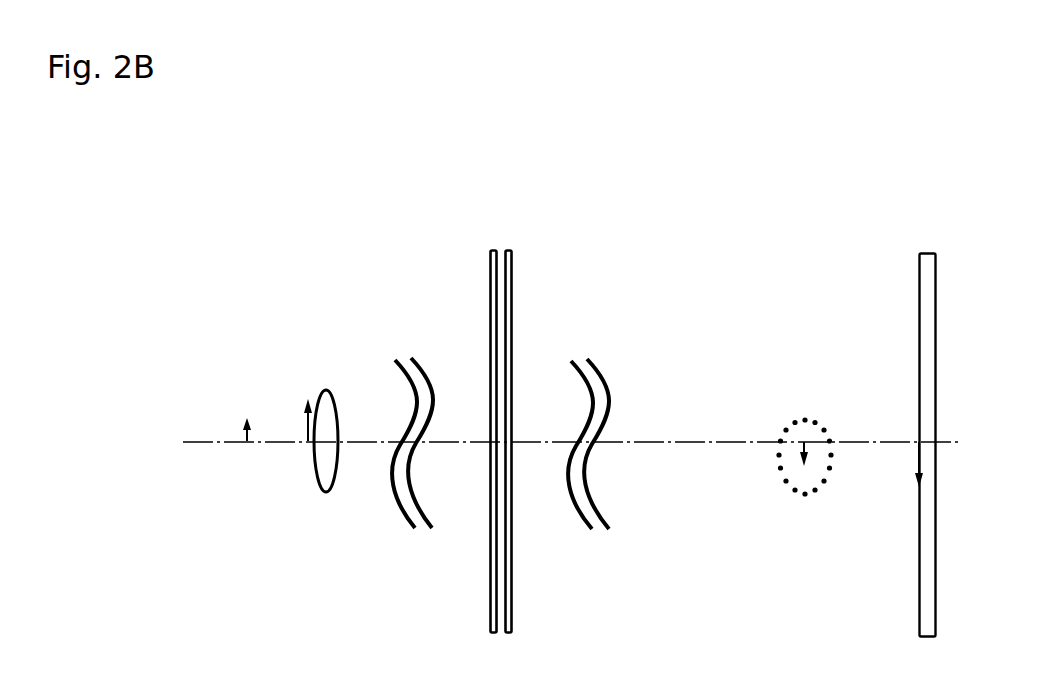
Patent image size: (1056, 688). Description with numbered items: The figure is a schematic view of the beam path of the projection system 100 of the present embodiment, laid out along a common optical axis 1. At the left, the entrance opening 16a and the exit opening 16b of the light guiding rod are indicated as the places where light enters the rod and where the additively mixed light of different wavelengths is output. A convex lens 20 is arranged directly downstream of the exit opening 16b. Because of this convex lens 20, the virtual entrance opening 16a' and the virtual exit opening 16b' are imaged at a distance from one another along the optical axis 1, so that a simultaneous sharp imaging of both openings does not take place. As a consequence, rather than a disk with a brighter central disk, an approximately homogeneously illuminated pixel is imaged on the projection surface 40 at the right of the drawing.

The optical axis 1 is at (694, 441).
The projection system 100 is at (568, 232).
The convex lens 20 is at (332, 491).
The entrance opening 16a is at (206, 419).
The exit opening 16b is at (340, 391).
The virtual entrance opening 16a' is at (791, 430).
The projection surface 40 is at (920, 300).
The virtual exit opening 16b' is at (969, 464).